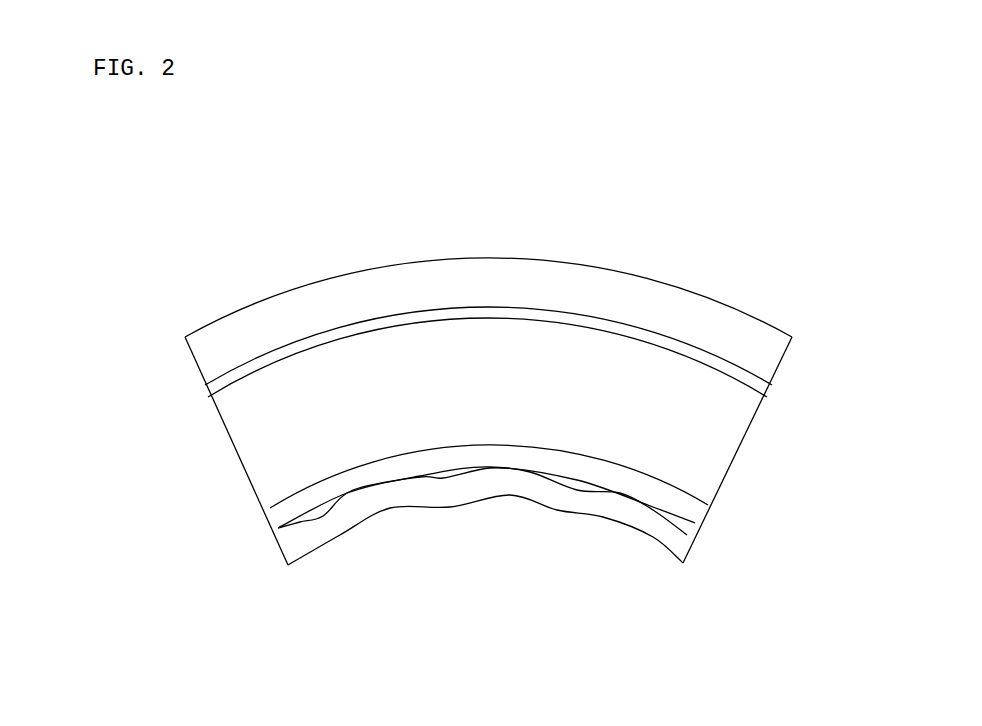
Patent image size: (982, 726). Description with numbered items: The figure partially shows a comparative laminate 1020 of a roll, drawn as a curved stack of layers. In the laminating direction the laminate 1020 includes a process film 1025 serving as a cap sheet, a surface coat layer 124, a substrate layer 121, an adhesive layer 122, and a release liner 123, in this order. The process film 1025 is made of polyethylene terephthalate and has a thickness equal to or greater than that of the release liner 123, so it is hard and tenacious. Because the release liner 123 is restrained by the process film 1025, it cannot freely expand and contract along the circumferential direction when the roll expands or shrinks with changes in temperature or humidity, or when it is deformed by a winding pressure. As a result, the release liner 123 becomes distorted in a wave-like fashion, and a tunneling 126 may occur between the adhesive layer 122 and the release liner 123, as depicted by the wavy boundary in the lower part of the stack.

The laminate 1020 is at (322, 246).
The process film 1025 is at (495, 283).
The surface coat layer 124 is at (763, 386).
The substrate layer 121 is at (725, 448).
The adhesive layer 122 is at (687, 510).
The tunneling 126 is at (450, 475).
The release liner 123 is at (508, 487).